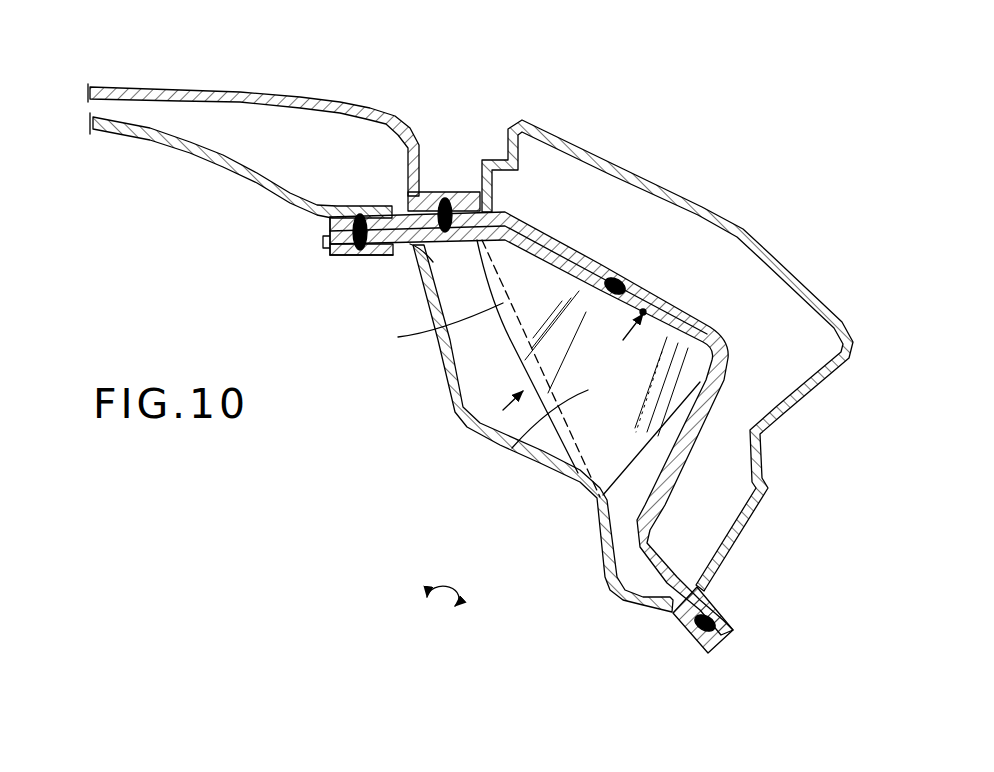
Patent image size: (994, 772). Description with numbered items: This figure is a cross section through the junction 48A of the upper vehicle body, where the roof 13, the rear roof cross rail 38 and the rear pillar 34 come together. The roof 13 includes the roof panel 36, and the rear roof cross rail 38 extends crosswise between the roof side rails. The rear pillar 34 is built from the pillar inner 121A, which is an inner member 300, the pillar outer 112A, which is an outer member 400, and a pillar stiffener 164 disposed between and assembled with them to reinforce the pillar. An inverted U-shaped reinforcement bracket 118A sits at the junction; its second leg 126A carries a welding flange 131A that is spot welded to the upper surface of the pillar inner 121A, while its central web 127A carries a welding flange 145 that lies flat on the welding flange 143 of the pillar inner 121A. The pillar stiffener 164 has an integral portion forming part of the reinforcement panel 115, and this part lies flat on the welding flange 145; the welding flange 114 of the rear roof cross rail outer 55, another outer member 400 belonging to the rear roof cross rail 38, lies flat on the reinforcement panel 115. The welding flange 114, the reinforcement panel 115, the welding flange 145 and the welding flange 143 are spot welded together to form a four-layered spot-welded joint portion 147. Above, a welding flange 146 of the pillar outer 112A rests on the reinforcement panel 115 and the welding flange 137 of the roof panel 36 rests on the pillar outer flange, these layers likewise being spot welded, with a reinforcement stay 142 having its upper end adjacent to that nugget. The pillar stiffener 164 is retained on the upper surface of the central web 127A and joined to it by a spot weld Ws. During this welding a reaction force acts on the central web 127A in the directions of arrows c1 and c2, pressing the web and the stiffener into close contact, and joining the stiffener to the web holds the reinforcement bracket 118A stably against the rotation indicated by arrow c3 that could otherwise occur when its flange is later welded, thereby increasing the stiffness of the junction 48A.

The roof panel 36 is at (203, 92).
The roof 13 is at (297, 94).
The junction 48A is at (392, 96).
The welding flange of the roof panel 137 is at (431, 192).
The welding flange of the pillar outer 146 is at (462, 192).
The pillar outer 112A is at (703, 205).
The outer member 400 is at (241, 185).
The rear pillar 34 is at (781, 259).
The welding flange of the rear roof cross rail outer 114 is at (355, 213).
The reinforcement panel 115 is at (410, 217).
The rear roof cross rail 38 is at (198, 159).
The rear roof cross rail outer 55 is at (250, 178).
The four-layered spot-welded joint portion 147 is at (320, 250).
The welding flange of the pillar inner 143 is at (376, 256).
The welding flange of the central web 145 is at (448, 256).
The reinforcement stay 142 is at (398, 337).
The pillar inner 121A is at (511, 341).
The inner member 300 is at (531, 382).
The reinforcement bracket 118A is at (456, 390).
The central web 127A is at (564, 257).
The spot weld Ws is at (624, 283).
The pillar stiffener 164 is at (733, 350).
The arrow c1 is at (504, 397).
The arrow c2 is at (622, 339).
The arrow c3 is at (446, 620).
The second leg 126A is at (523, 463).
The welding flange 131A is at (574, 470).